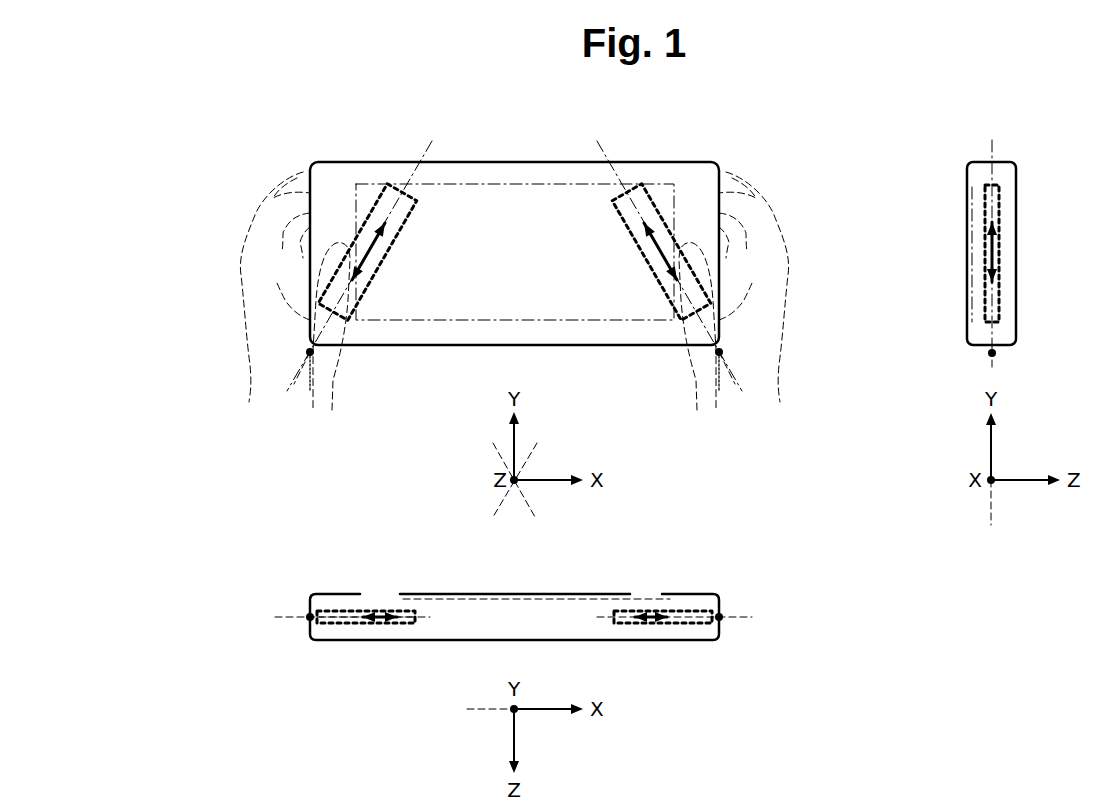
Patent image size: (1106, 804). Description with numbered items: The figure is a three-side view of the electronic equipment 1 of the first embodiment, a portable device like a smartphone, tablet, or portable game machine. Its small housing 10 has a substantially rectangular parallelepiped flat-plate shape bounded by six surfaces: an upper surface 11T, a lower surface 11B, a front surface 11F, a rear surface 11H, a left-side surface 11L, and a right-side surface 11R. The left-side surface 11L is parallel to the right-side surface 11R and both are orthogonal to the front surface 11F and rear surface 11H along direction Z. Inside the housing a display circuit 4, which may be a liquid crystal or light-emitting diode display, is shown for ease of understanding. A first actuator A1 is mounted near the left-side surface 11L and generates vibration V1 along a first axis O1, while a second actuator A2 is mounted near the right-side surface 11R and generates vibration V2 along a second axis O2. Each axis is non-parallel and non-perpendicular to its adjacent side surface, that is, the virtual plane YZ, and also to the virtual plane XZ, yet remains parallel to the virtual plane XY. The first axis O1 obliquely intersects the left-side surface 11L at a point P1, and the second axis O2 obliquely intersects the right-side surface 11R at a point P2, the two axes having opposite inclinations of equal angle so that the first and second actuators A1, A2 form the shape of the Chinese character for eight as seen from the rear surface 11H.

The electronic equipment 1 is at (311, 138).
The housing 10 is at (698, 162).
The display circuit 4 is at (428, 322).
The upper surface 11T is at (492, 176).
The front surface 11F is at (549, 160).
The left-side surface 11L is at (310, 196).
The right-side surface 11R is at (720, 196).
The rear surface 11H is at (607, 345).
The lower surface 11B is at (383, 640).
The first actuator A1 is at (365, 185).
The second actuator A2 is at (664, 188).
The first axis O1 is at (405, 371).
The second axis O2 is at (732, 411).
The vibration V1 is at (375, 422).
The vibration V2 is at (815, 422).
The point P1 is at (634, 479).
The point P2 is at (737, 479).